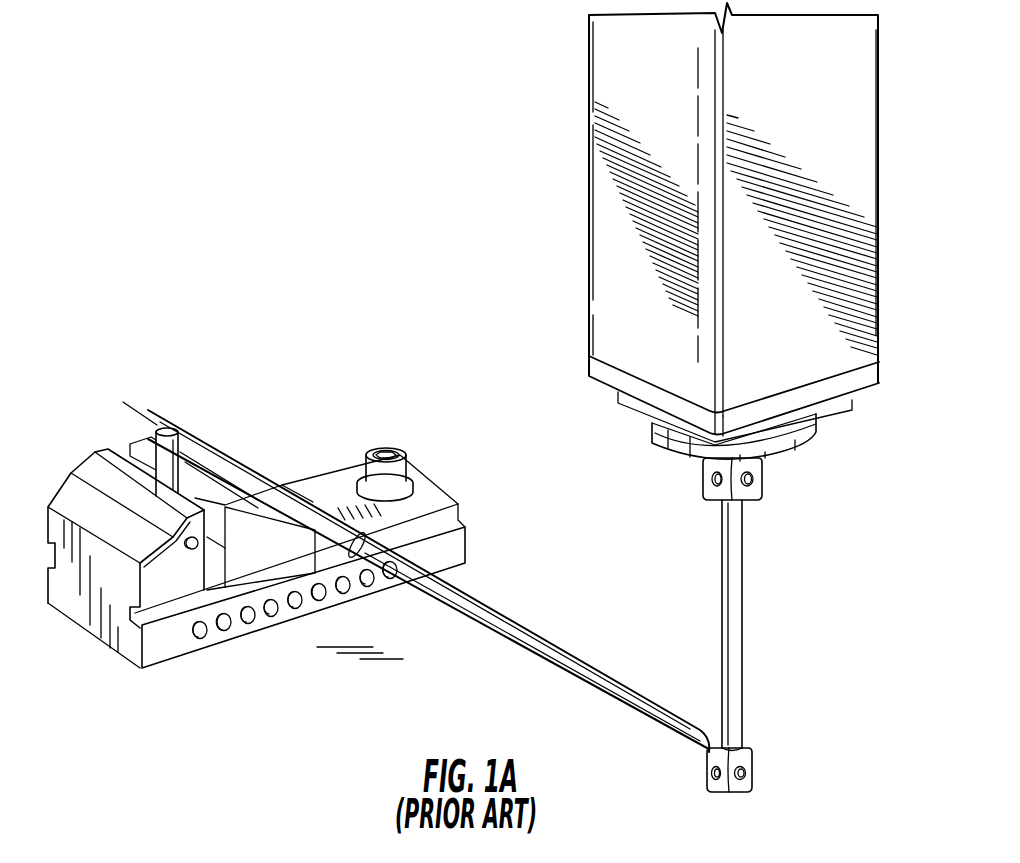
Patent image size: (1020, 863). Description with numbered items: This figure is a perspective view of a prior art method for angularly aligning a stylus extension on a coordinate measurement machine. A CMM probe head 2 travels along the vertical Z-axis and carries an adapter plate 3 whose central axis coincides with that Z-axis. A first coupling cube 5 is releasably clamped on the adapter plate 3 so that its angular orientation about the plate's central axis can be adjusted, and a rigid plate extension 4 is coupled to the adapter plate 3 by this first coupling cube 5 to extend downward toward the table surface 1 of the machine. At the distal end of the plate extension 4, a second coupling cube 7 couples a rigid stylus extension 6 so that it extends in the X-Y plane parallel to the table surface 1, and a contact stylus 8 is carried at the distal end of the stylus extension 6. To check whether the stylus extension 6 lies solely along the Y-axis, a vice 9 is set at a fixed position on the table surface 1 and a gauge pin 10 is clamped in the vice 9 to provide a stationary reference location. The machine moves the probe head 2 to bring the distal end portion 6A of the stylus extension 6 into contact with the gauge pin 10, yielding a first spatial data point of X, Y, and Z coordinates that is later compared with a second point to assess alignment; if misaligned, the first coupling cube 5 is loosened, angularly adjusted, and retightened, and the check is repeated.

The table surface 1 is at (446, 697).
The CMM probe head 2 is at (605, 225).
The adapter plate 3 is at (682, 456).
The plate extension 4 is at (741, 609).
The first coupling cube 5 is at (761, 481).
The stylus extension 6 is at (527, 630).
The distal end portion 6A is at (218, 437).
The second coupling cube 7 is at (753, 771).
The contact stylus 8 is at (124, 402).
The vice 9 is at (330, 466).
The gauge pin 10 is at (167, 447).